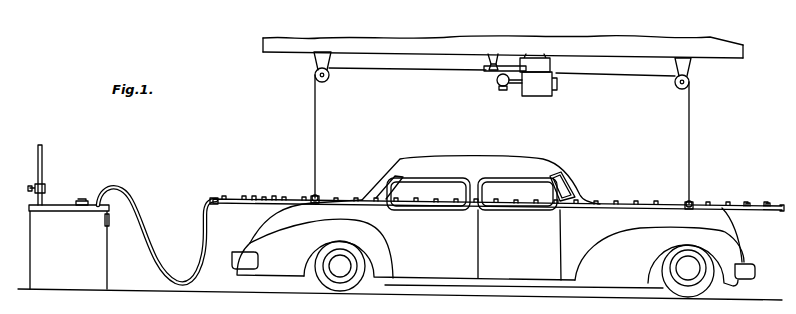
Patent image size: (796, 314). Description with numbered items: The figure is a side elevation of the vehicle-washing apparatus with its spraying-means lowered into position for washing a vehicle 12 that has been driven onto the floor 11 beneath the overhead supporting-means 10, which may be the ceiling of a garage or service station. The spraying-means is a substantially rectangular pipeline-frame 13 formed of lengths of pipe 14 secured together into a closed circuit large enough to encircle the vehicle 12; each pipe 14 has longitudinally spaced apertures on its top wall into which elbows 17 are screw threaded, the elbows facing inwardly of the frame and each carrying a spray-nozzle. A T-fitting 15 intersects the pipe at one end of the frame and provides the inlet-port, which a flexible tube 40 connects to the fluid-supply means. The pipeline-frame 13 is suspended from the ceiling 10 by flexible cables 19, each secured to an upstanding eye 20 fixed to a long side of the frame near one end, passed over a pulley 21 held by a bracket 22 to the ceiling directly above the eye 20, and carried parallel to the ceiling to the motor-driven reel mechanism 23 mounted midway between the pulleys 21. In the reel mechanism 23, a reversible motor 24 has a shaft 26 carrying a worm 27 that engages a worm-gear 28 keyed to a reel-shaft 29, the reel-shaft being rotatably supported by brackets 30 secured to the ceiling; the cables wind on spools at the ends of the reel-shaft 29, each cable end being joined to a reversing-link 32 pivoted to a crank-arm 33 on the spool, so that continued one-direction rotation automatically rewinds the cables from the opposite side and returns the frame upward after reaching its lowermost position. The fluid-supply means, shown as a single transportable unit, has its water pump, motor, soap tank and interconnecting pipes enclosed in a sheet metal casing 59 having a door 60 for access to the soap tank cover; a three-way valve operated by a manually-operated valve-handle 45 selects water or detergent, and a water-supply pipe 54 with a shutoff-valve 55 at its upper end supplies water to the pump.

The overhead supporting-means 10 is at (735, 58).
The floor 11 is at (762, 300).
The vehicle 12 is at (436, 157).
The pipeline-frame 13 is at (244, 197).
The pipe 14 is at (285, 197).
The T-fitting 15 is at (215, 197).
The elbow 17 is at (274, 196).
The flexible cable 19 is at (315, 127).
The upstanding eye 20 is at (318, 196).
The pulley 21 is at (327, 81).
The bracket 22 is at (316, 60).
The motor-driven reel mechanism 23 is at (504, 76).
The reversible motor 24 is at (542, 96).
The shaft 26 is at (514, 84).
The worm 27 is at (503, 90).
The worm-gear 28 is at (497, 82).
The reel-shaft 29 is at (504, 66).
The bracket 30 is at (491, 62).
The reversing-link 32 is at (530, 60).
The crank-arm 33 is at (521, 66).
The flexible tube 40 is at (158, 262).
The valve-handle 45 is at (83, 199).
The water-supply pipe 54 is at (43, 165).
The shutoff-valve 55 is at (45, 189).
The sheet metal casing 59 is at (107, 268).
The door 60 is at (108, 224).